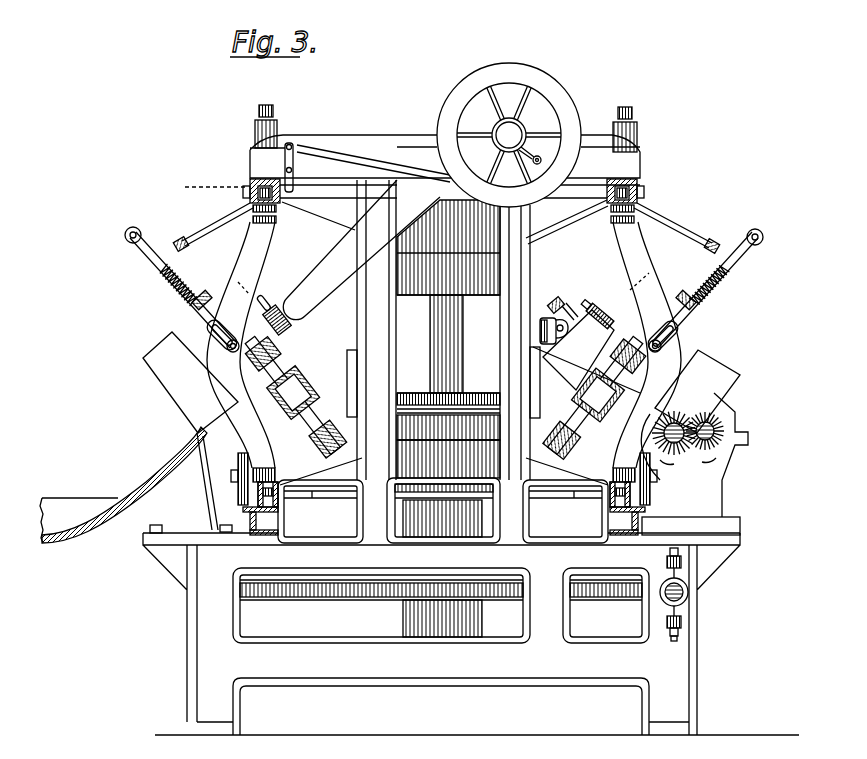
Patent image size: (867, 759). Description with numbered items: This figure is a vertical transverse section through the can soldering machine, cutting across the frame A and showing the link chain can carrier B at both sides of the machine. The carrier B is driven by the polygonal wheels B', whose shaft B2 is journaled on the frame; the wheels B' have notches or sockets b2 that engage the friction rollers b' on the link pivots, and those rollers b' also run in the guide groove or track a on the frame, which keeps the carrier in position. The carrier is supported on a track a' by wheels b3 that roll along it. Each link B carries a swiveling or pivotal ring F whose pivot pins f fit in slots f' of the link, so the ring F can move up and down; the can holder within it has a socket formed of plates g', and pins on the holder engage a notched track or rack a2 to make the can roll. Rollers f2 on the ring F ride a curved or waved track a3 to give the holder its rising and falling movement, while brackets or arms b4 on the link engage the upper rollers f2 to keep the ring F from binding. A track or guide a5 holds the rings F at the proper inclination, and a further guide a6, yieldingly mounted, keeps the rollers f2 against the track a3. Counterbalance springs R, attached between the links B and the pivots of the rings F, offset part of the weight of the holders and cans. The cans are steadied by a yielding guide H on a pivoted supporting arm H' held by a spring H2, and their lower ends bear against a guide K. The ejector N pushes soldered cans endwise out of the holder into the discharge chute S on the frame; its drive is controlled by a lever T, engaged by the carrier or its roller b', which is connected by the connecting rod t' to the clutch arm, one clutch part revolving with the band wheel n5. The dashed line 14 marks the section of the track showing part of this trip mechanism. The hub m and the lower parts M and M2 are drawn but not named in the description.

The band wheel n5 is at (563, 108).
The wheel shaft m is at (516, 141).
The connecting rod t' is at (367, 152).
The lever T is at (283, 167).
The guide groove or track a is at (441, 344).
The section line 14 is at (320, 186).
The friction rollers b' is at (475, 346).
The guide or track a6 is at (188, 254).
The brackets or arms b4 is at (155, 267).
The counterbalance springs R is at (180, 285).
The link chain can carrier B is at (444, 345).
The polygonal wheels B' is at (443, 356).
The shaft B2 is at (440, 326).
The slots f' is at (429, 333).
The pivot pins f is at (424, 347).
The plates g' is at (508, 395).
The ejector N is at (288, 335).
The swiveling or pivotal ring F is at (347, 347).
The wheels or rollers f2 is at (320, 413).
The curved or waved track a3 is at (333, 442).
The track or guide a5 is at (460, 407).
The notched track or rack a2 is at (607, 377).
The spring H2 is at (556, 300).
The pivoted supporting arm H' is at (561, 310).
The yielding guide H is at (597, 306).
The guide K is at (720, 397).
The wheels b3 is at (238, 460).
The track a' is at (453, 498).
The discharge chute S is at (123, 485).
The frame A is at (471, 457).
The notches or sockets b2 is at (441, 498).
The shaft M2 is at (330, 590).
The motor cylinder M is at (688, 593).